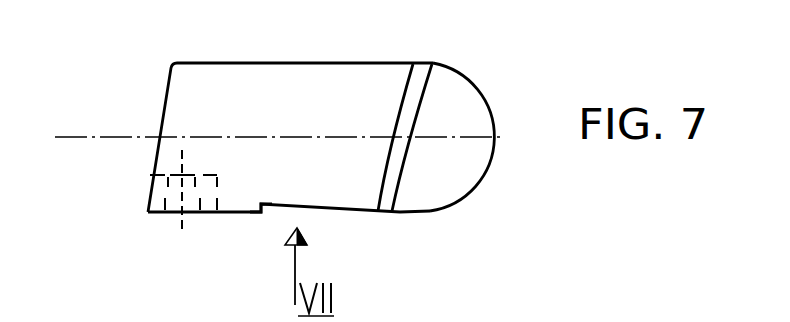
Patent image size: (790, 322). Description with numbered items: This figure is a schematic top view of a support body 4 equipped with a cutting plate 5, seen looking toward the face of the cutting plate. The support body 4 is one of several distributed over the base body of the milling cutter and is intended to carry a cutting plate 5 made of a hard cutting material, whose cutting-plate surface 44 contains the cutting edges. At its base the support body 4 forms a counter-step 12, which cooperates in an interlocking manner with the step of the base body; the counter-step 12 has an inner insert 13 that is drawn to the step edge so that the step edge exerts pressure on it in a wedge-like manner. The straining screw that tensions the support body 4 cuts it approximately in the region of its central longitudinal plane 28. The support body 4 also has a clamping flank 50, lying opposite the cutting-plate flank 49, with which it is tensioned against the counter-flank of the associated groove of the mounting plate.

The central longitudinal plane 28 is at (77, 137).
The support body 4 is at (248, 95).
The clamping flank 50 is at (267, 62).
The counter-step 12 is at (379, 134).
The inner insert 13 is at (395, 200).
The cutting plate 5 is at (152, 190).
The cutting-plate surface 44 is at (171, 213).
The cutting-plate flank 49 is at (250, 213).